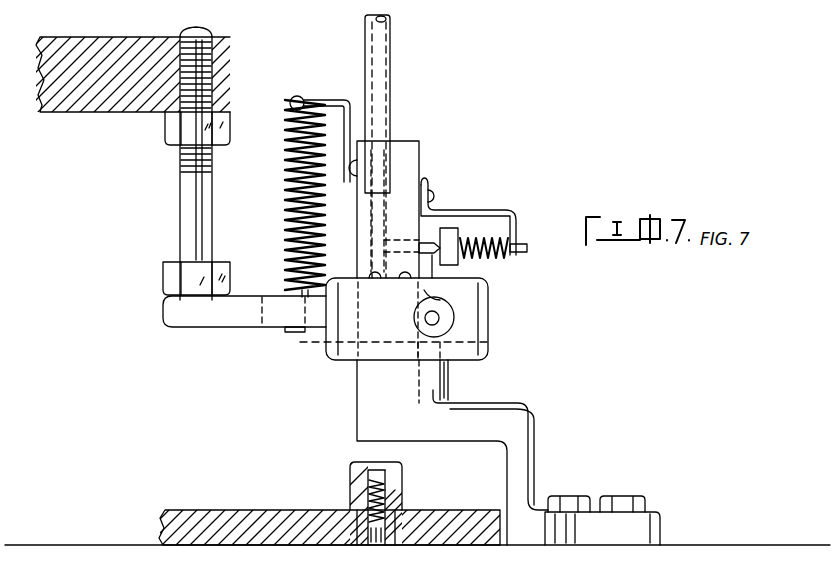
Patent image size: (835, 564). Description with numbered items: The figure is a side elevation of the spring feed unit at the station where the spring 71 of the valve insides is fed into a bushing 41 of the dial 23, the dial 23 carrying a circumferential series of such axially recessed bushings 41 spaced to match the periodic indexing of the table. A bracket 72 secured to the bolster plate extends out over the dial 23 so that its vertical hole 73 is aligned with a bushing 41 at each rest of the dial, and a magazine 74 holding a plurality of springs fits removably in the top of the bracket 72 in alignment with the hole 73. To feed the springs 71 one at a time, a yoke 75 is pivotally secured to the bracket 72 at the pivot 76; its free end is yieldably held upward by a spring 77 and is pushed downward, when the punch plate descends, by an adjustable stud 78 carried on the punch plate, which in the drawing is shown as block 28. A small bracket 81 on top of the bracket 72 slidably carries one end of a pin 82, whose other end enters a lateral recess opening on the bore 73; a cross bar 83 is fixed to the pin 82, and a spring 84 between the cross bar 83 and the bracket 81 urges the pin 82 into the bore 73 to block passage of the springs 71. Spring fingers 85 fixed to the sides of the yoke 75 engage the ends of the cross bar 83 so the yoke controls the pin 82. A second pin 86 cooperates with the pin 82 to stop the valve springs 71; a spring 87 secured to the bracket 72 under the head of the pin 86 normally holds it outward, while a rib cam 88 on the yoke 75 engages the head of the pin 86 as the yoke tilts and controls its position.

The support block 28 is at (92, 113).
The adjustable stud 78 is at (178, 215).
The spring 77 is at (290, 216).
The vertical hole 73 is at (357, 410).
The magazine 74 is at (392, 100).
The small bracket 81 is at (480, 210).
The cross bar 83 is at (450, 228).
The spring 84 is at (487, 236).
The pin 82 is at (529, 247).
The spring fingers 85 is at (421, 243).
The yoke 75 is at (490, 315).
The pivot 76 is at (452, 312).
The spring 87 is at (444, 298).
The rib cam 88 is at (490, 342).
The second pin 86 is at (446, 362).
The bracket 72 is at (535, 420).
The dial 23 is at (256, 509).
The bushing 41 is at (350, 487).
The spring 71 is at (386, 500).